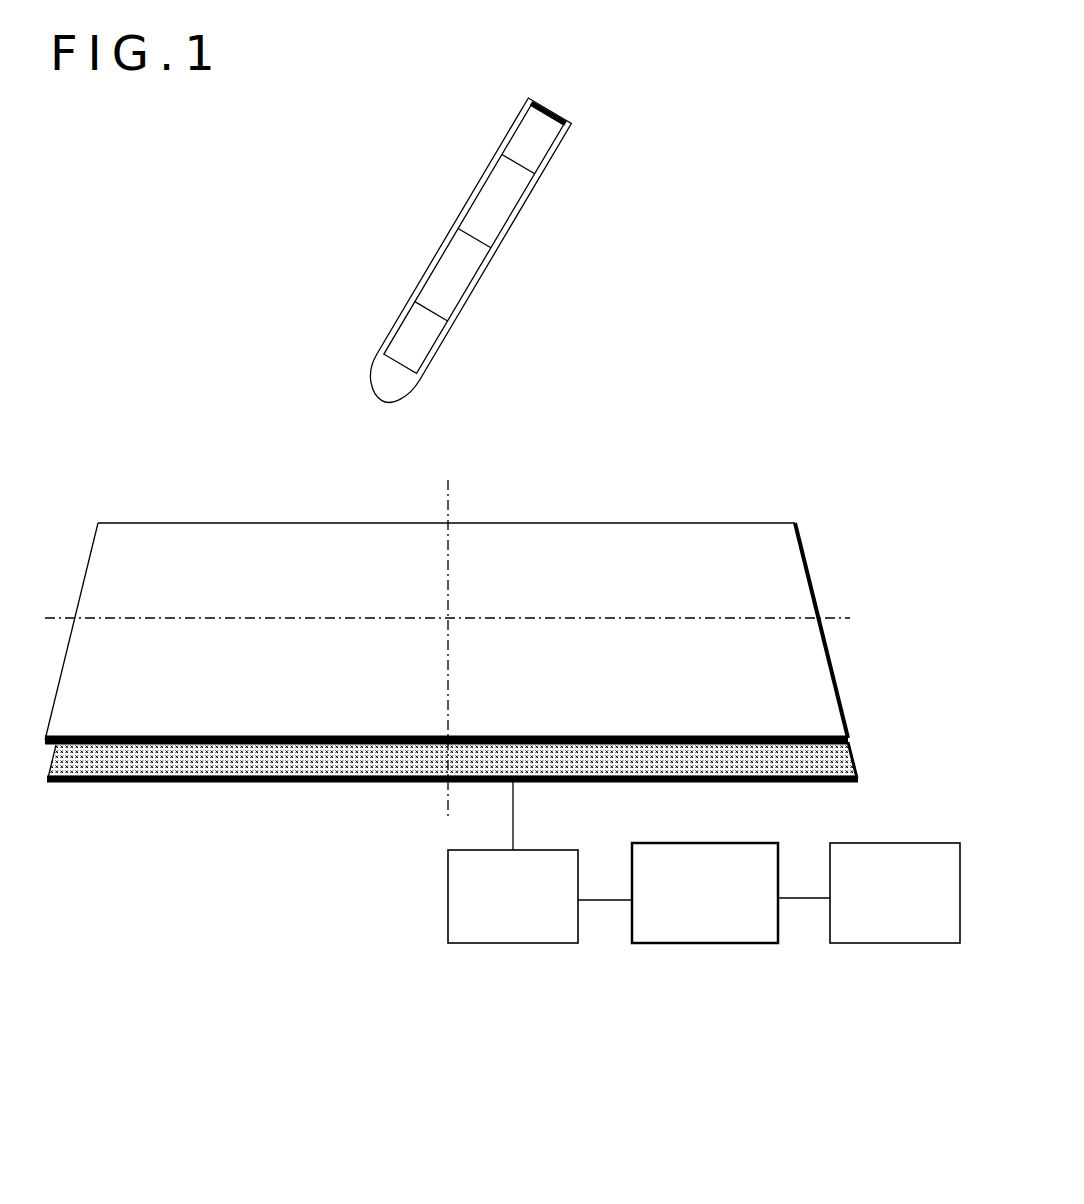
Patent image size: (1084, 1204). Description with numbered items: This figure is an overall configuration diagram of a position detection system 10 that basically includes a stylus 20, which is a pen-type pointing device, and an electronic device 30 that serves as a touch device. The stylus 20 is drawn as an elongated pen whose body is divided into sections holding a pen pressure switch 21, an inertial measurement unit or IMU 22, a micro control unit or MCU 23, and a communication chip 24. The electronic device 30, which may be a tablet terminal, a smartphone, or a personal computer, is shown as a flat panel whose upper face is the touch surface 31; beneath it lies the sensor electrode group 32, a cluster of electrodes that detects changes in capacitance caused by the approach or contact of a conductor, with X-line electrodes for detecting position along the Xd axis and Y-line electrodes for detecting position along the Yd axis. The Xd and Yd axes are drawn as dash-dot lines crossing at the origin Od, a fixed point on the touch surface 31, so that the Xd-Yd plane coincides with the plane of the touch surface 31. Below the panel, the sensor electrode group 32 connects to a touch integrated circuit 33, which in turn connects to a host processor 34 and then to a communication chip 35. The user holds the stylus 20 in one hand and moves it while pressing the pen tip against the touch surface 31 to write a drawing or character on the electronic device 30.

The position detection system 10 is at (214, 130).
The stylus 20 is at (496, 255).
The pen pressure switch 21 is at (446, 325).
The inertial measurement unit 22 is at (473, 252).
The micro control unit 23 is at (523, 177).
The communication chip 24 is at (547, 128).
The electronic device 30 is at (502, 723).
The touch surface 31 is at (212, 543).
The sensor electrode group 32 is at (275, 770).
The touch integrated circuit 33 is at (512, 946).
The host processor 34 is at (703, 945).
The communication chip 35 is at (895, 946).